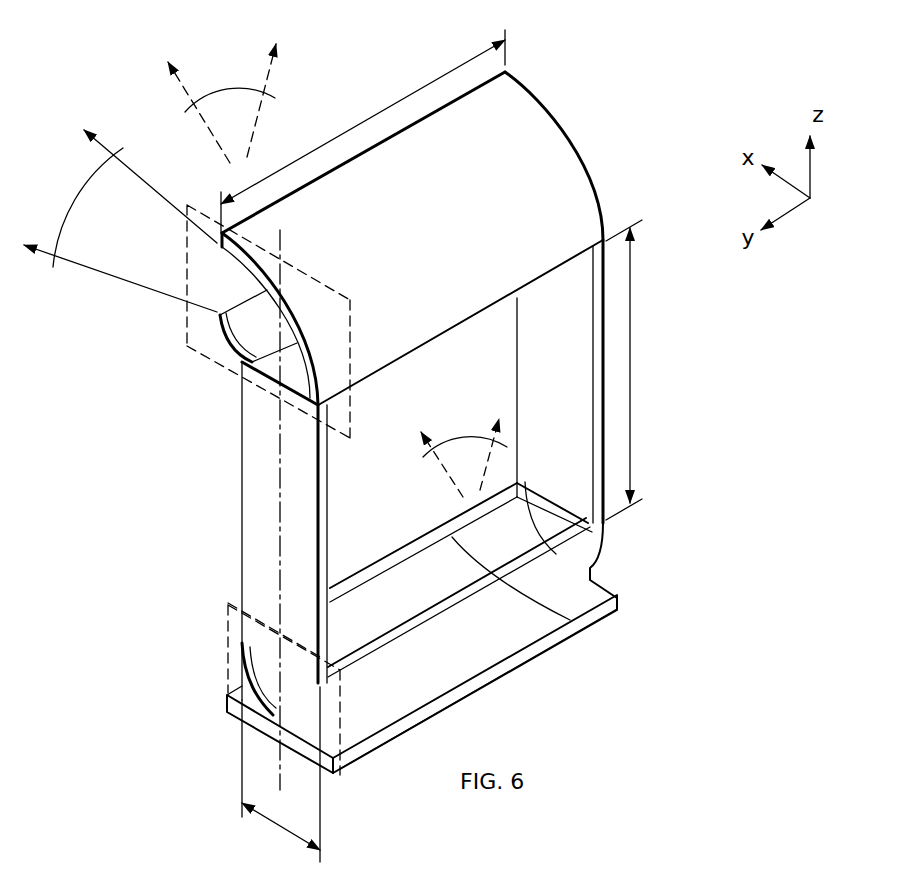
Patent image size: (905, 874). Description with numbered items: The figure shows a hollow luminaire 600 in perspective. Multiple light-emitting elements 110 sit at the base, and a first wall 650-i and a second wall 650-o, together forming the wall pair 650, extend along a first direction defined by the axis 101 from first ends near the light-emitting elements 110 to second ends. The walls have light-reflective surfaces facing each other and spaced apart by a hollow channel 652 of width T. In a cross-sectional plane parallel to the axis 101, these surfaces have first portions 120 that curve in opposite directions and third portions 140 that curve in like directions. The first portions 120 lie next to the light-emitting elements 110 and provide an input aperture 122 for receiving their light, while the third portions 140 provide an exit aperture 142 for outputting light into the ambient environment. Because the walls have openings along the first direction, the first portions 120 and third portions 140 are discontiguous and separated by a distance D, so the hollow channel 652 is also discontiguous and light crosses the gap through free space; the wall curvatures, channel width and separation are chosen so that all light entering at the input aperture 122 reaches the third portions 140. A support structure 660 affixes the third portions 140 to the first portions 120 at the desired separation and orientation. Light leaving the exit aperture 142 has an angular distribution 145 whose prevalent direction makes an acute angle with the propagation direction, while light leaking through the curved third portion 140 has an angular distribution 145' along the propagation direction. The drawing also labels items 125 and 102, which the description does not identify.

The hollow luminaire 600 is at (115, 70).
The third portions 140 is at (319, 276).
The exit aperture 142 is at (229, 285).
The angular distribution of output light 145 is at (120, 237).
The angular distribution of leaked light 145' is at (268, 97).
The inner airflow direction range 125 is at (435, 472).
The first portions 120 is at (229, 640).
The support structure 660 is at (242, 497).
The hollow channel 652 is at (269, 328).
The input aperture 122 is at (273, 715).
The axis 101 is at (278, 773).
The first wall 650-i is at (568, 600).
The second wall 650-o is at (600, 540).
The first and second walls 650 is at (712, 548).
The light-emitting elements 110 is at (229, 693).
The base plate side face 102 is at (357, 762).